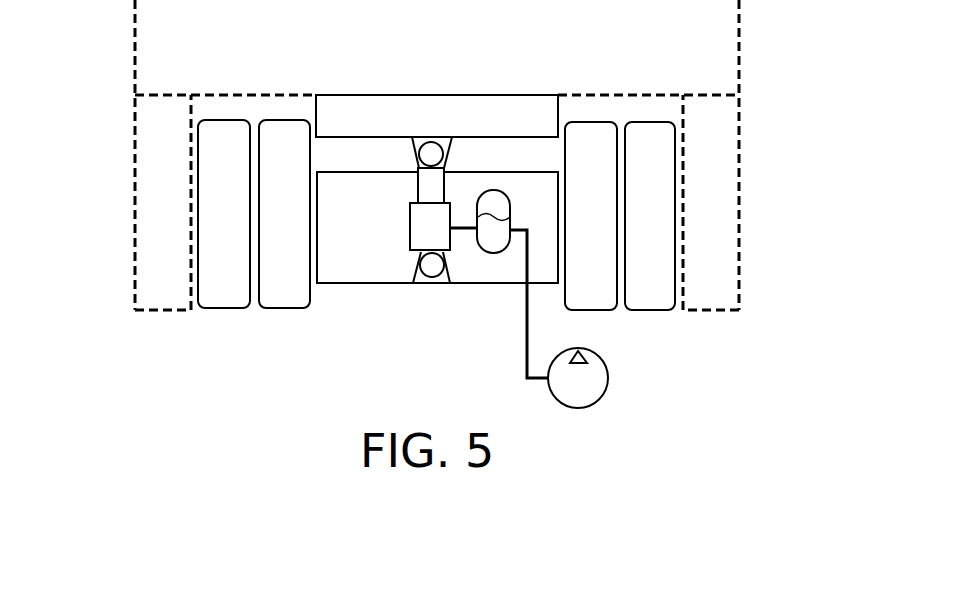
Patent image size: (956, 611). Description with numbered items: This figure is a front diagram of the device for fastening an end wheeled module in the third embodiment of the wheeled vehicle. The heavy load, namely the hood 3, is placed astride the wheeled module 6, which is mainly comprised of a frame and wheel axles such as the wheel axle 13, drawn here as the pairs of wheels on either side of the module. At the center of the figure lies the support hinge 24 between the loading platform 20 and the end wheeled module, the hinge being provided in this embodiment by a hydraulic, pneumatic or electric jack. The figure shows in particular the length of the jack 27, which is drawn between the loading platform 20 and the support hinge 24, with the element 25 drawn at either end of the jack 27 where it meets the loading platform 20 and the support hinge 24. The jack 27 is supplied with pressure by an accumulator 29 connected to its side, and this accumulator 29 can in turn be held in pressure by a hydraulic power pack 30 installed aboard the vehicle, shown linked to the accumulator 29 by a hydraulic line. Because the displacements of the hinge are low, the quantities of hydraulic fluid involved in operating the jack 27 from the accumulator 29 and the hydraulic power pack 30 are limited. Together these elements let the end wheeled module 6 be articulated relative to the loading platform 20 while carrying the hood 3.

The hood 3 is at (710, 70).
The wheeled module 6 is at (113, 123).
The wheel axle 13 is at (270, 300).
The loading platform 20 is at (349, 97).
The support hinge 24 is at (387, 293).
The hydraulic cylinders 25 is at (440, 148).
The jack 27 is at (422, 223).
The accumulator 29 is at (495, 206).
The hydraulic power pack 30 is at (608, 378).